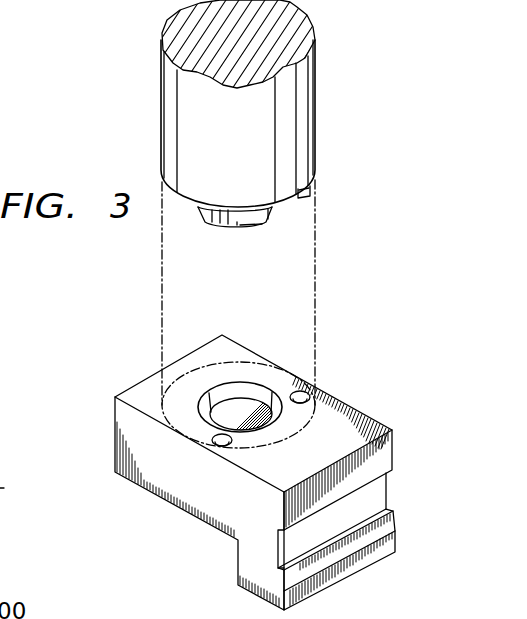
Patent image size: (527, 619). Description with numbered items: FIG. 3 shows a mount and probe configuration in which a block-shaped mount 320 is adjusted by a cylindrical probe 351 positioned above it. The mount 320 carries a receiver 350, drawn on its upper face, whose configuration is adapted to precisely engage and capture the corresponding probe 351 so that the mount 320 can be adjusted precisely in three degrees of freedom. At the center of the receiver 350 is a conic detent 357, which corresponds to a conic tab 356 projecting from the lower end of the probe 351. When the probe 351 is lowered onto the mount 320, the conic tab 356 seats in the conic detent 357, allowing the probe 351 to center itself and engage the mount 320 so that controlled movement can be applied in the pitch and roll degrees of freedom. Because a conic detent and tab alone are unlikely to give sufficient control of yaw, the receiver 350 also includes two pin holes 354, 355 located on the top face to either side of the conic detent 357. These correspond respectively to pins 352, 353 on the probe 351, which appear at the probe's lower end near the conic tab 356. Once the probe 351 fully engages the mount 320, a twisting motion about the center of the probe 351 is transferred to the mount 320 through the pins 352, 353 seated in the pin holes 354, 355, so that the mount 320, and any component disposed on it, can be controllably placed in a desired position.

The mount 320 is at (203, 509).
The receiver 350 is at (236, 449).
The probe 351 is at (160, 103).
The pin 352 is at (297, 200).
The pin 353 is at (218, 226).
The pin hole 354 is at (297, 393).
The pin hole 355 is at (222, 438).
The conic tab 356 is at (255, 226).
The conic detent 357 is at (242, 408).